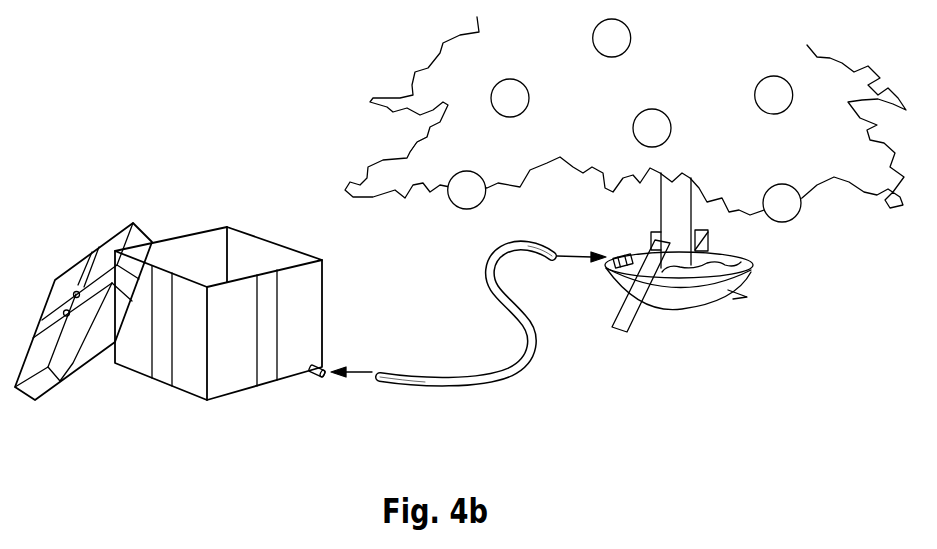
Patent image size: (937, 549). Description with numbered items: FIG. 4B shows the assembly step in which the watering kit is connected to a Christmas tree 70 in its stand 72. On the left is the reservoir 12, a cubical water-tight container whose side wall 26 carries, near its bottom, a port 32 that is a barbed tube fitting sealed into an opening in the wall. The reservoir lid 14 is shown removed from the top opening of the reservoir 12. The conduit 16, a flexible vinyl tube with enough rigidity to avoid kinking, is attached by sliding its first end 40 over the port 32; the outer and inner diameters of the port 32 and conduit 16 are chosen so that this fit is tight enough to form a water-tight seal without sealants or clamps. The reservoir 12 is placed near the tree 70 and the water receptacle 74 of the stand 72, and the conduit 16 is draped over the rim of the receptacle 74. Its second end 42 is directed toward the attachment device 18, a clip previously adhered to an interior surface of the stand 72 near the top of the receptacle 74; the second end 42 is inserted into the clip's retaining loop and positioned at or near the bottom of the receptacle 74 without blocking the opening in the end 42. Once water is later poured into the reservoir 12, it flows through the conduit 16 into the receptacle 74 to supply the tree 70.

The reservoir 12 is at (193, 380).
The reservoir lid 14 is at (62, 288).
The conduit 16 is at (477, 355).
The attachment device 18 is at (622, 257).
The side wall 26 is at (418, 138).
The port 32 is at (312, 376).
The first end 40 is at (390, 378).
The second end 42 is at (533, 253).
The Christmas tree 70 is at (625, 142).
The stand 72 is at (655, 307).
The water receptacle 74 is at (703, 307).